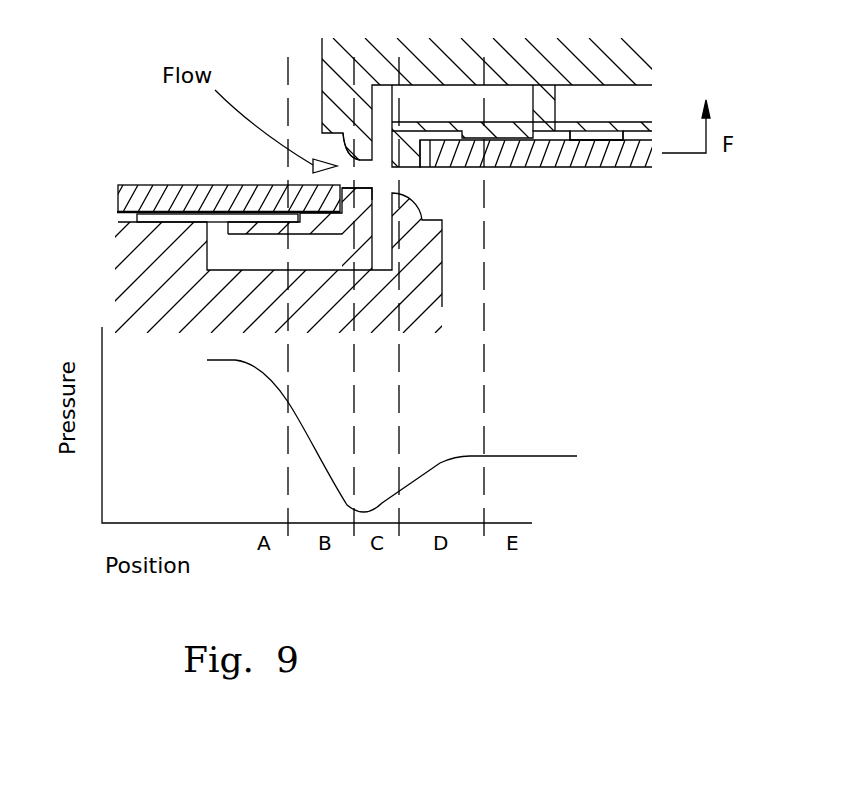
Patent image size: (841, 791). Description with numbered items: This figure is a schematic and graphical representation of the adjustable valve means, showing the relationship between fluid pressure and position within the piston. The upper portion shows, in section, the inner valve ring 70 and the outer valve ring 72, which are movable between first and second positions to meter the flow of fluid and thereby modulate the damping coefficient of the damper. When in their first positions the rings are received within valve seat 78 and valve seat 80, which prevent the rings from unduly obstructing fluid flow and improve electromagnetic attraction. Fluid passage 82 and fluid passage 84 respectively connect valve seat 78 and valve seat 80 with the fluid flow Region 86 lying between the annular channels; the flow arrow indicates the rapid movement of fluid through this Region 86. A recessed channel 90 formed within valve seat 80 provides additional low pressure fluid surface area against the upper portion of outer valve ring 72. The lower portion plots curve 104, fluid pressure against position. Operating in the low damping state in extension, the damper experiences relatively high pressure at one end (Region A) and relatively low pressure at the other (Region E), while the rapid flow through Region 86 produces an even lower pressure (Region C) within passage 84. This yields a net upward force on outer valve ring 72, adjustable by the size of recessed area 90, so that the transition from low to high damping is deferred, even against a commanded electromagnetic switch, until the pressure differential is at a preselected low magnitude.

The inner valve ring 70 is at (170, 185).
The outer valve ring 72 is at (583, 160).
The valve seat 78 is at (340, 200).
The valve seat 80 is at (432, 143).
The fluid passage 82 is at (245, 248).
The fluid passage 84 is at (468, 105).
The fluid flow Region 86 is at (150, 212).
The recessed channel 90 is at (575, 140).
The curve 104 is at (419, 436).